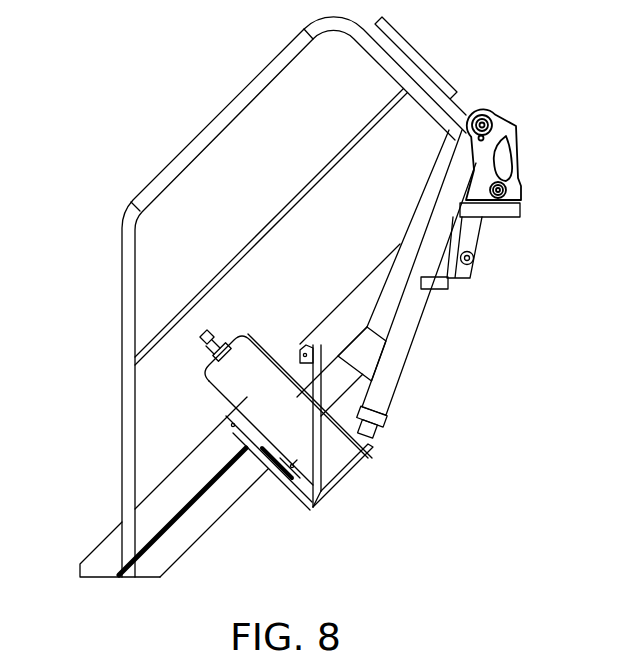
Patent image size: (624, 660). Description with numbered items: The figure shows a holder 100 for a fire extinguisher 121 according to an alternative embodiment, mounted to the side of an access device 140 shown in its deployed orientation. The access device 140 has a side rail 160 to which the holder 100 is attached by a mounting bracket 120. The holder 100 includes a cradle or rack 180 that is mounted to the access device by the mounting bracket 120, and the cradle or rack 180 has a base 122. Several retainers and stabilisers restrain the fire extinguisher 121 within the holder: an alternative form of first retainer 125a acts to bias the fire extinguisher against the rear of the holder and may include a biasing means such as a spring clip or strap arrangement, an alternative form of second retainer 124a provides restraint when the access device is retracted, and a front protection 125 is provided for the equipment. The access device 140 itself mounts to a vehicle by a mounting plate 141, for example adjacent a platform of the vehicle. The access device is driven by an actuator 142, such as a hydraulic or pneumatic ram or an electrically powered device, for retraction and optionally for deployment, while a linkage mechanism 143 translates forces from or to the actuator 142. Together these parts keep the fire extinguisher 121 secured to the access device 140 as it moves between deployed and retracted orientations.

The holder 100 is at (357, 466).
The mounting bracket 120 is at (387, 406).
The fire extinguisher 121 is at (213, 392).
The base 122 is at (345, 485).
The second retainer 124a is at (203, 333).
The front protection 125 is at (235, 428).
The first retainer 125a is at (283, 488).
The access device 140 is at (197, 527).
The mounting plate 141 is at (517, 190).
The actuator 142 is at (430, 328).
The linkage mechanism 143 is at (483, 228).
The side rail 160 is at (103, 538).
The cradle or rack 180 is at (320, 513).